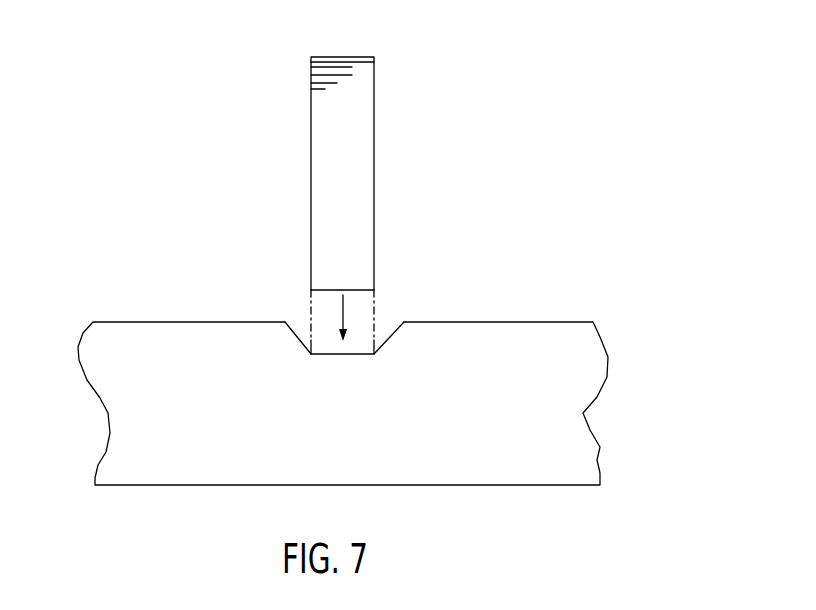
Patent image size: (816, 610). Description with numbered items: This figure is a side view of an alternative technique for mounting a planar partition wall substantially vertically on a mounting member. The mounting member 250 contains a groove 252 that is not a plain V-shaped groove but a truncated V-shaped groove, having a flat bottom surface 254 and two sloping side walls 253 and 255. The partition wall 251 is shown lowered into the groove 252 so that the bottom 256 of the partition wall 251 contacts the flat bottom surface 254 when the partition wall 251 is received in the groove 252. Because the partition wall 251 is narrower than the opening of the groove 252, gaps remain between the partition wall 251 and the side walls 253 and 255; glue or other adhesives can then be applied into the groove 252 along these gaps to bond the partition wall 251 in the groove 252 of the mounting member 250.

The mounting member 250 is at (614, 369).
The partition wall 251 is at (378, 126).
The groove 252 is at (386, 318).
The sloping side wall 253 is at (400, 347).
The flat bottom surface 254 is at (341, 366).
The sloping side wall 255 is at (291, 347).
The bottom of the partition wall 256 is at (319, 295).